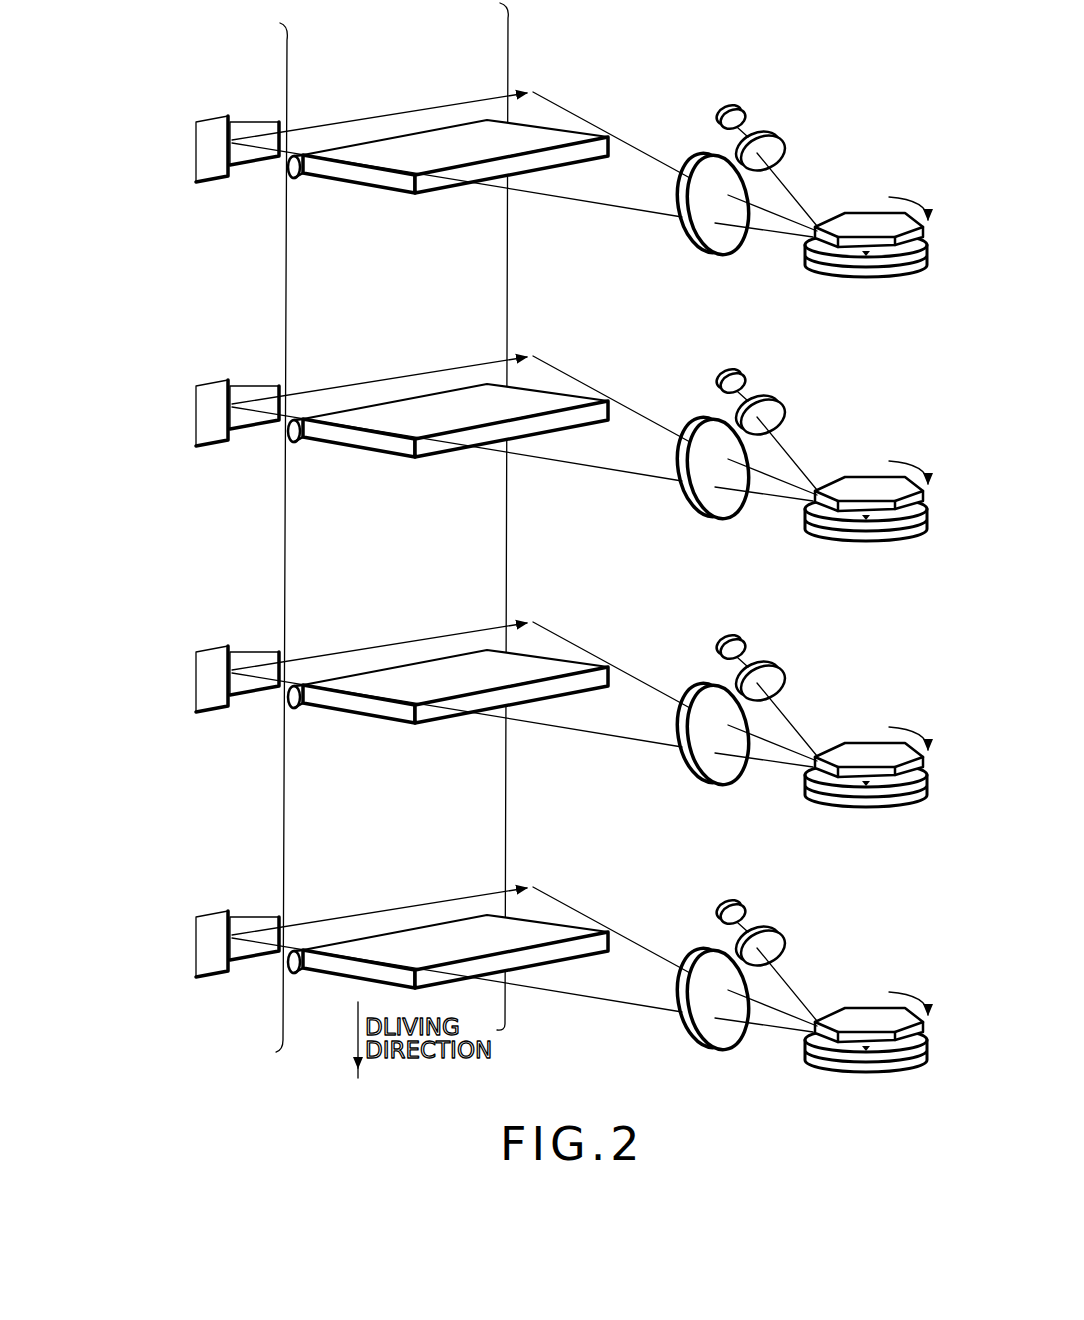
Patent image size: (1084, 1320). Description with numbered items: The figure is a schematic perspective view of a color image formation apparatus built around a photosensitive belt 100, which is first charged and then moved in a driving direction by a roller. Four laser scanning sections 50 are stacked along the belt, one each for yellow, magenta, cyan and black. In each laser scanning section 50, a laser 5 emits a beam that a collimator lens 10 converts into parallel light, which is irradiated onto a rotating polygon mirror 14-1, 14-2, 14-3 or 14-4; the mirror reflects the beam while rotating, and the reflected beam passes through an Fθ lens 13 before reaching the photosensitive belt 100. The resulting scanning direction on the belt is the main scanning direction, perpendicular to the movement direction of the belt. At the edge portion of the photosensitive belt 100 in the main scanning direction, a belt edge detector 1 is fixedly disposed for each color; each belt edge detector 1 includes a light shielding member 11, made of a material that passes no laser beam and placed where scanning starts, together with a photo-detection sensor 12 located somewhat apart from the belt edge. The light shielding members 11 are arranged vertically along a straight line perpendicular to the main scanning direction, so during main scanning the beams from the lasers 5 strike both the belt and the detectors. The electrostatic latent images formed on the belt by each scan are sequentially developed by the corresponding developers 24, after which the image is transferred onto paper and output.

The photosensitive belt 100 is at (297, 42).
The belt edge detector 1 is at (185, 117).
The light shielding member 11 is at (196, 150).
The photo-detection sensor 12 is at (246, 122).
The developer 24 is at (301, 178).
The laser scanning section 50 is at (878, 103).
The laser 5 is at (741, 87).
The collimator lens 10 is at (786, 124).
The Fθ lens 13 is at (680, 238).
The polygon mirror 14-1 is at (865, 210).
The polygon mirror 14-2 is at (865, 474).
The polygon mirror 14-3 is at (865, 740).
The polygon mirror 14-4 is at (865, 1005).